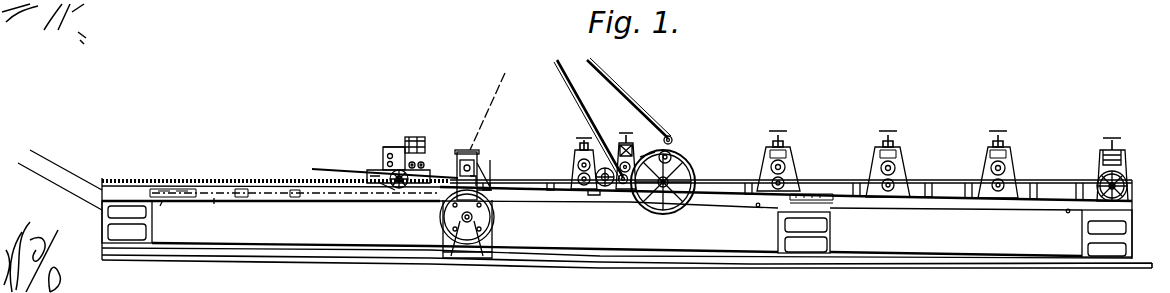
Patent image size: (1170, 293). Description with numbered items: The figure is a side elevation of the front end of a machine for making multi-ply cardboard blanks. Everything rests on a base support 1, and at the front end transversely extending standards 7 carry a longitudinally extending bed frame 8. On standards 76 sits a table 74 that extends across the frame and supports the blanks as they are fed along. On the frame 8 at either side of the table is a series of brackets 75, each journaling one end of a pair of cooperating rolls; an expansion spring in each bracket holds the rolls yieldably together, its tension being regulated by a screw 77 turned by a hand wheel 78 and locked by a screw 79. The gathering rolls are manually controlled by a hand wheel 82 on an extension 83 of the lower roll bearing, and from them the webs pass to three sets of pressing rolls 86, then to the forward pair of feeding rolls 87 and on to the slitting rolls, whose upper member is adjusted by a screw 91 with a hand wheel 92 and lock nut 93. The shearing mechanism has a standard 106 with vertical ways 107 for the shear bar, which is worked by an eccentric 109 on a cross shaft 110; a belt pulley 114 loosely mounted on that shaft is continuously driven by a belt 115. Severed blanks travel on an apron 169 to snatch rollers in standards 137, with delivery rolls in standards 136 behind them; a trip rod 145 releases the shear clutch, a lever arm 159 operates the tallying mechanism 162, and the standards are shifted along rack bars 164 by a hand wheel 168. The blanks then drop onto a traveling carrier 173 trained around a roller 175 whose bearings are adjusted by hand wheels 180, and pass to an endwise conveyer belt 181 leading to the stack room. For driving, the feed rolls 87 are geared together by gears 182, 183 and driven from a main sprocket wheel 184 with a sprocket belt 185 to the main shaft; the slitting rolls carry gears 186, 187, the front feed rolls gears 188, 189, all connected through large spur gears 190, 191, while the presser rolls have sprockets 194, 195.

The base support 1 is at (336, 247).
The transversely extending standards 7 is at (102, 248).
The bed frame 8 is at (572, 206).
The table 74 is at (542, 181).
The brackets 75 is at (578, 162).
The standards 76 is at (556, 182).
The screw 77 is at (877, 176).
The hand wheel 78 is at (780, 131).
The screw 79 is at (784, 151).
The hand wheel 82 is at (1098, 169).
The extension 83 is at (1097, 181).
The pressing rolls 86 is at (880, 167).
The forward pair of feeding rolls 87 is at (884, 197).
The screw 91 is at (637, 173).
The hand wheel 92 is at (628, 134).
The lock nut 93 is at (664, 139).
The standard 106 is at (481, 136).
The vertically extending ways 107 is at (480, 158).
The eccentric 109 is at (470, 187).
The cross shaft 110 is at (447, 224).
The belt pulley 114 is at (462, 217).
The belt 115 is at (491, 111).
The standards 136 is at (392, 173).
The standards 137 is at (412, 190).
The trip rod 145 is at (320, 165).
The lever arm 159 is at (414, 163).
The tallying mechanism 162 is at (409, 142).
The rack bars 164 is at (276, 174).
The hand wheel 168 is at (400, 189).
The apron 169 is at (424, 166).
The traveling carrier 173 is at (248, 207).
The roller 175 is at (171, 211).
The hand wheels 180 is at (214, 209).
The endwise conveyer belt 181 is at (51, 180).
The gear 182 is at (680, 182).
The gear 183 is at (670, 211).
The main sprocket wheel 184 is at (687, 200).
The sprocket belt 185 is at (618, 97).
The gear 186 is at (660, 155).
The gear 187 is at (622, 193).
The gear 188 is at (821, 164).
The gear 189 is at (580, 201).
The spur gear 190 is at (603, 188).
The spur gear 191 is at (647, 209).
The sprocket 194 is at (760, 168).
The sprocket 195 is at (796, 175).